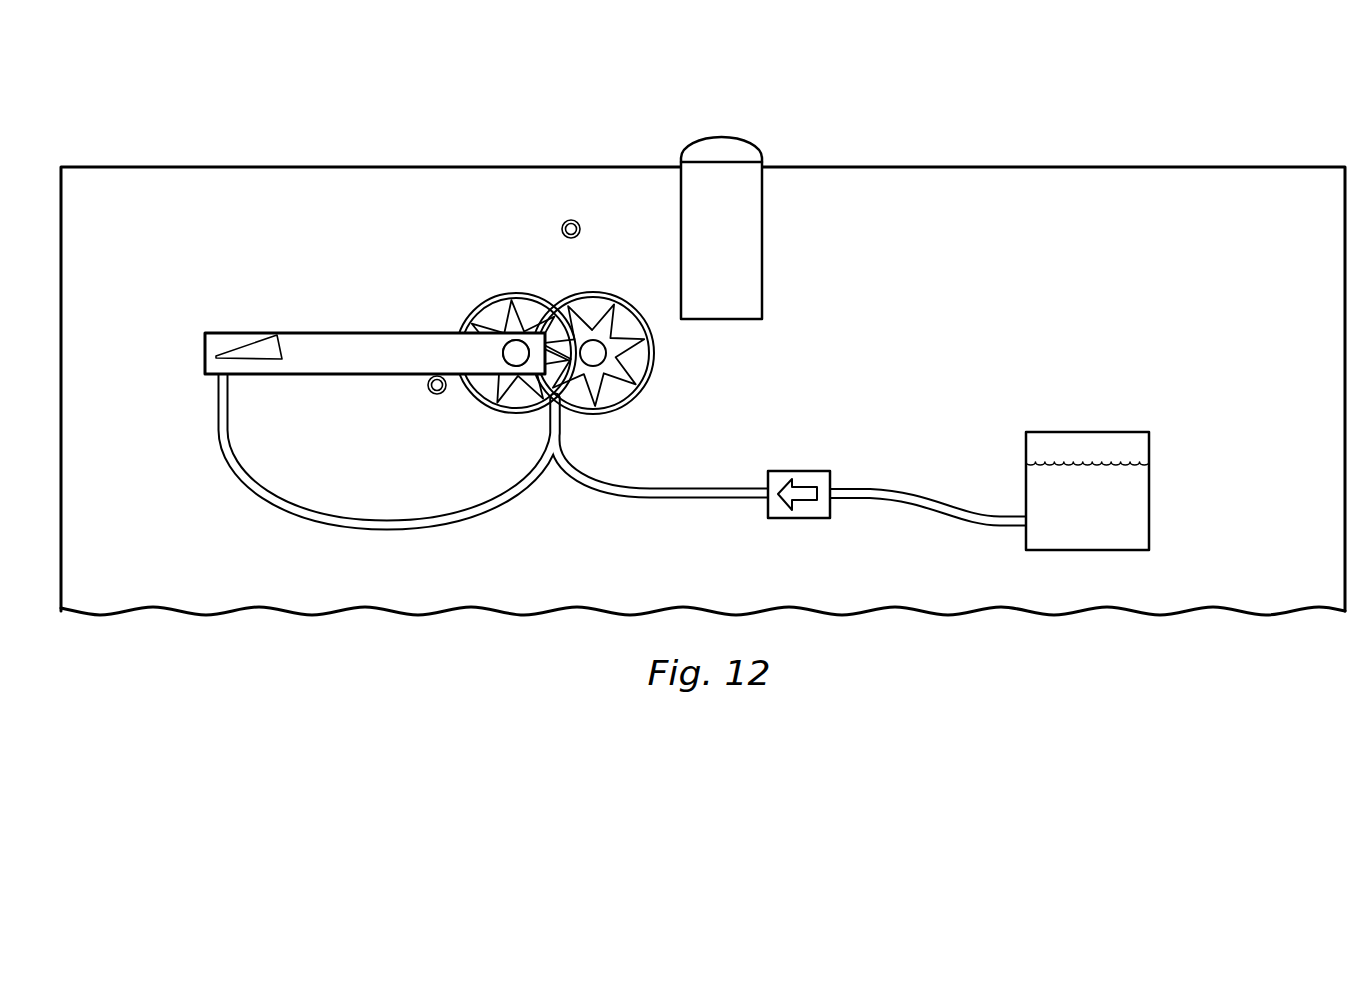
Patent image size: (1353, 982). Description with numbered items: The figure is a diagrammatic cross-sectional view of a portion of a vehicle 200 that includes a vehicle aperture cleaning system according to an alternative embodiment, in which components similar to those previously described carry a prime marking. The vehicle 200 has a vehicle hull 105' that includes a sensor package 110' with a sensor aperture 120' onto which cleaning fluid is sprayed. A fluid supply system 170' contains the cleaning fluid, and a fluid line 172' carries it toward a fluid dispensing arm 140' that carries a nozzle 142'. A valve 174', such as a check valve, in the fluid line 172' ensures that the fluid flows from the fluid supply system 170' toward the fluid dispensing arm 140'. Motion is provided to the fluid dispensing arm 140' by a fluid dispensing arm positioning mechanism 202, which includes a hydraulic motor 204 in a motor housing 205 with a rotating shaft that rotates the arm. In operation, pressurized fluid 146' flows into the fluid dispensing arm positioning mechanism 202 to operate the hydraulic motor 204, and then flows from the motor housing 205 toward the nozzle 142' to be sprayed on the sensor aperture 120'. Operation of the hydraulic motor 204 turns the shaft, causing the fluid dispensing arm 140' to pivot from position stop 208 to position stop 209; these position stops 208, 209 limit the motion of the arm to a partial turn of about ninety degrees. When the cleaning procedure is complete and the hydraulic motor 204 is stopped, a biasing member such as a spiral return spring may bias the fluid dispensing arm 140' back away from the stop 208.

The vehicle 200 is at (442, 93).
The vehicle hull 105' is at (703, 364).
The sensor package 110' is at (783, 240).
The sensor aperture 120' is at (730, 125).
The fluid dispensing arm 140' is at (368, 327).
The nozzle 142' is at (280, 329).
The pressurized fluid 146' is at (1126, 450).
The fluid supply system 170' is at (1126, 463).
The fluid line 172' is at (624, 475).
The valve 174' is at (804, 467).
The fluid dispensing arm positioning mechanism 202 is at (585, 313).
The hydraulic motor 204 is at (589, 318).
The motor housing 205 is at (654, 378).
The position stop 208 is at (430, 395).
The position stop 209 is at (579, 223).